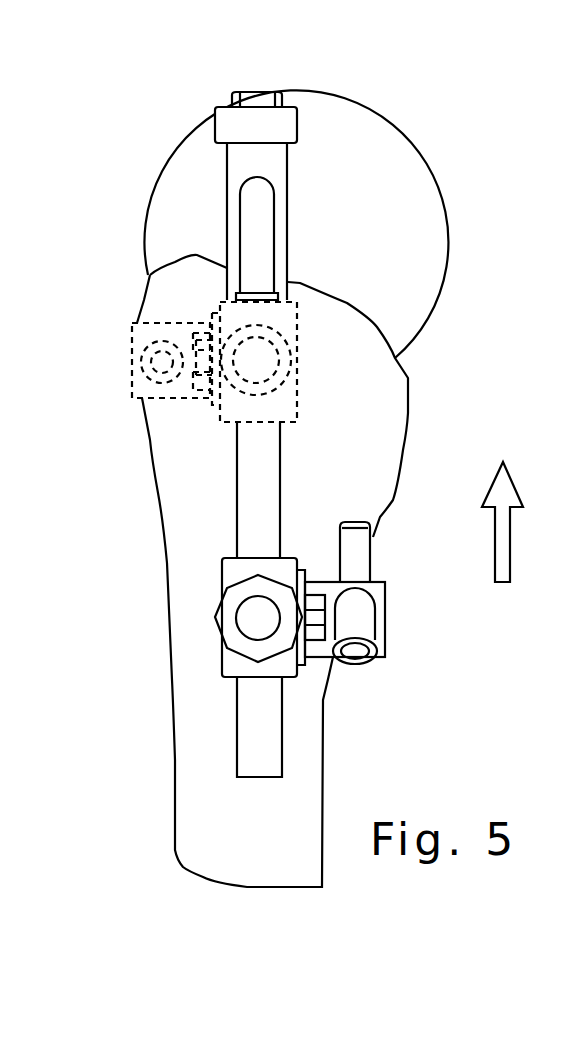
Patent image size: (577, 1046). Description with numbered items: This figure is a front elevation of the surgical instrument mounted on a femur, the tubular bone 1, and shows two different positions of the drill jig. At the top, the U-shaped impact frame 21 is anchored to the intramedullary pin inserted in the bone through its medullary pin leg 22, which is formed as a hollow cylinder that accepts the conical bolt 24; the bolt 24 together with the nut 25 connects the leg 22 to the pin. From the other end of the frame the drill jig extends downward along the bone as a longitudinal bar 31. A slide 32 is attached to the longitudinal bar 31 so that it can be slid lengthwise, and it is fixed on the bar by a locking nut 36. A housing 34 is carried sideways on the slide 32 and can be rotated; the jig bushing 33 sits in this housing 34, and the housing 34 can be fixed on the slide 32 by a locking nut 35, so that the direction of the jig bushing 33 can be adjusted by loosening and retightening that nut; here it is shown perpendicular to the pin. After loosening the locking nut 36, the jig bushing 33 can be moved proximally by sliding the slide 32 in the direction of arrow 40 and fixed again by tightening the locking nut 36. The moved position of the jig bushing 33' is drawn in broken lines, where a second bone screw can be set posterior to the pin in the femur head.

The tubular bone 1 is at (455, 375).
The impact frame 21 is at (253, 192).
The medullary pin leg 22 is at (270, 160).
The conical bolt 24 is at (253, 101).
The nut 25 is at (277, 121).
The longitudinal bar 31 is at (260, 461).
The slide 32 is at (230, 571).
The jig bushing 33 is at (389, 552).
The jig bushing in moved position 33' is at (149, 359).
The housing 34 is at (358, 600).
The locking nut 35 is at (313, 617).
The locking nut 36 is at (233, 633).
The arrow 40 is at (505, 538).